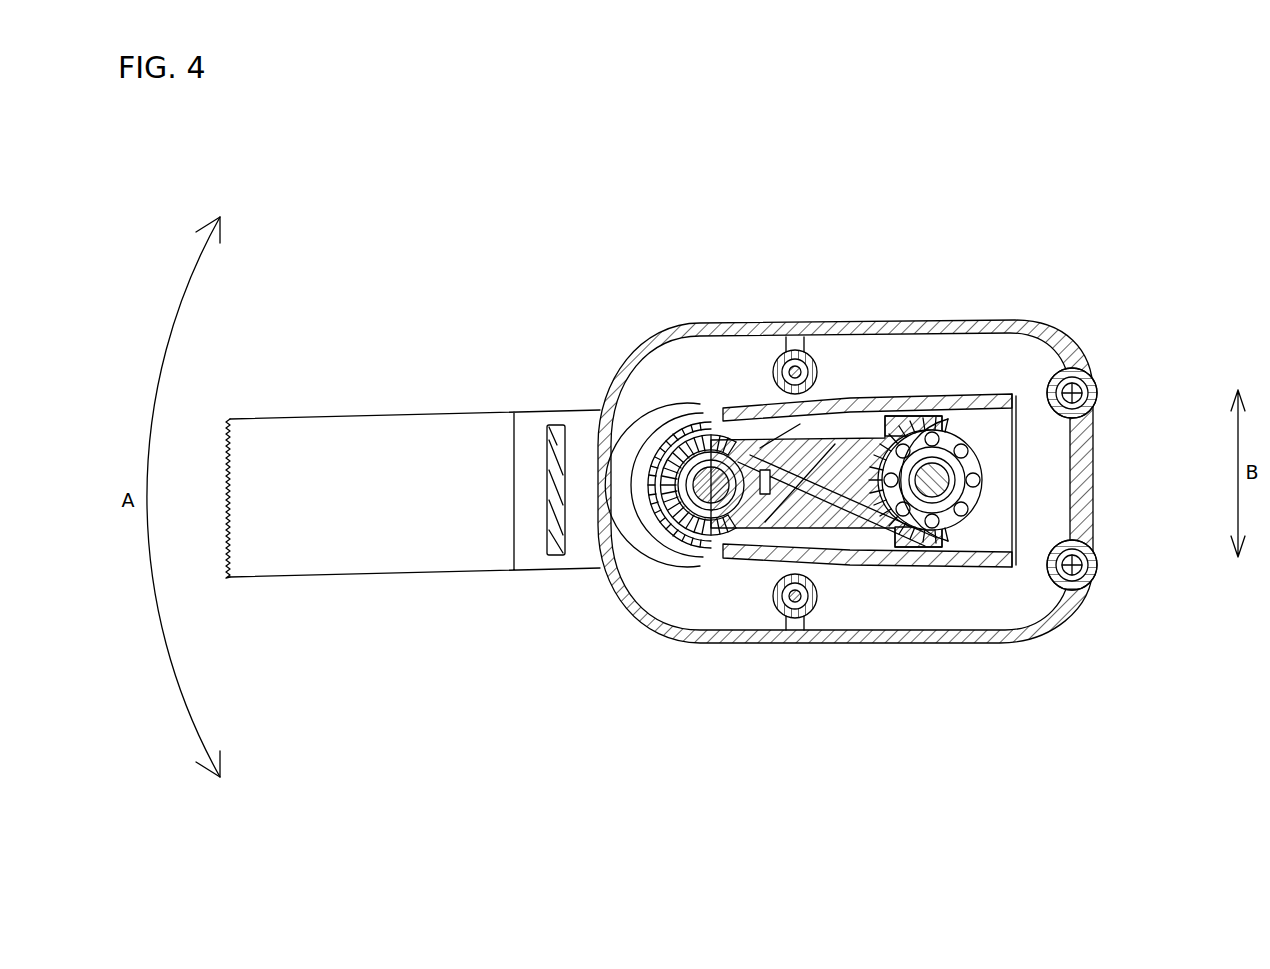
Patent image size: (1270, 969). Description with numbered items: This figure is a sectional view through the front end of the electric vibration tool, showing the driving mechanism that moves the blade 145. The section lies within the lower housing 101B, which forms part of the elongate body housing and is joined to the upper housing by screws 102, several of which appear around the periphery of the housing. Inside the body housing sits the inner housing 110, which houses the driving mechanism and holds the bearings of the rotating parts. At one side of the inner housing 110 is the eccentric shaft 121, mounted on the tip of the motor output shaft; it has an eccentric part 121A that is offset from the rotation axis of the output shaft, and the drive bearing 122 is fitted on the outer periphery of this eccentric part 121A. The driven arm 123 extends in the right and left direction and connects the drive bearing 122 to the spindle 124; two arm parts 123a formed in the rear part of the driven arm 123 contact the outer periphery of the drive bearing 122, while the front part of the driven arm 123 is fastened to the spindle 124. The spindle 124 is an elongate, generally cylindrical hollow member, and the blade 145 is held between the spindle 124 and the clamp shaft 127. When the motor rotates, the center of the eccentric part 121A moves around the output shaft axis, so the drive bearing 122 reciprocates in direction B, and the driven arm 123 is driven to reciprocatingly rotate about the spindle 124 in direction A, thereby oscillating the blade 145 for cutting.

The lower housing 101B is at (872, 323).
The screws 102 is at (795, 350).
The inner housing 110 is at (1000, 394).
The eccentric shaft 121 is at (1065, 495).
The eccentric part 121A is at (932, 480).
The drive bearing 122 is at (970, 466).
The driven arm 123 is at (850, 533).
The arm parts 123a is at (930, 416).
The spindle 124 is at (700, 462).
The clamp shaft 127 is at (713, 466).
The blade 145 is at (386, 548).